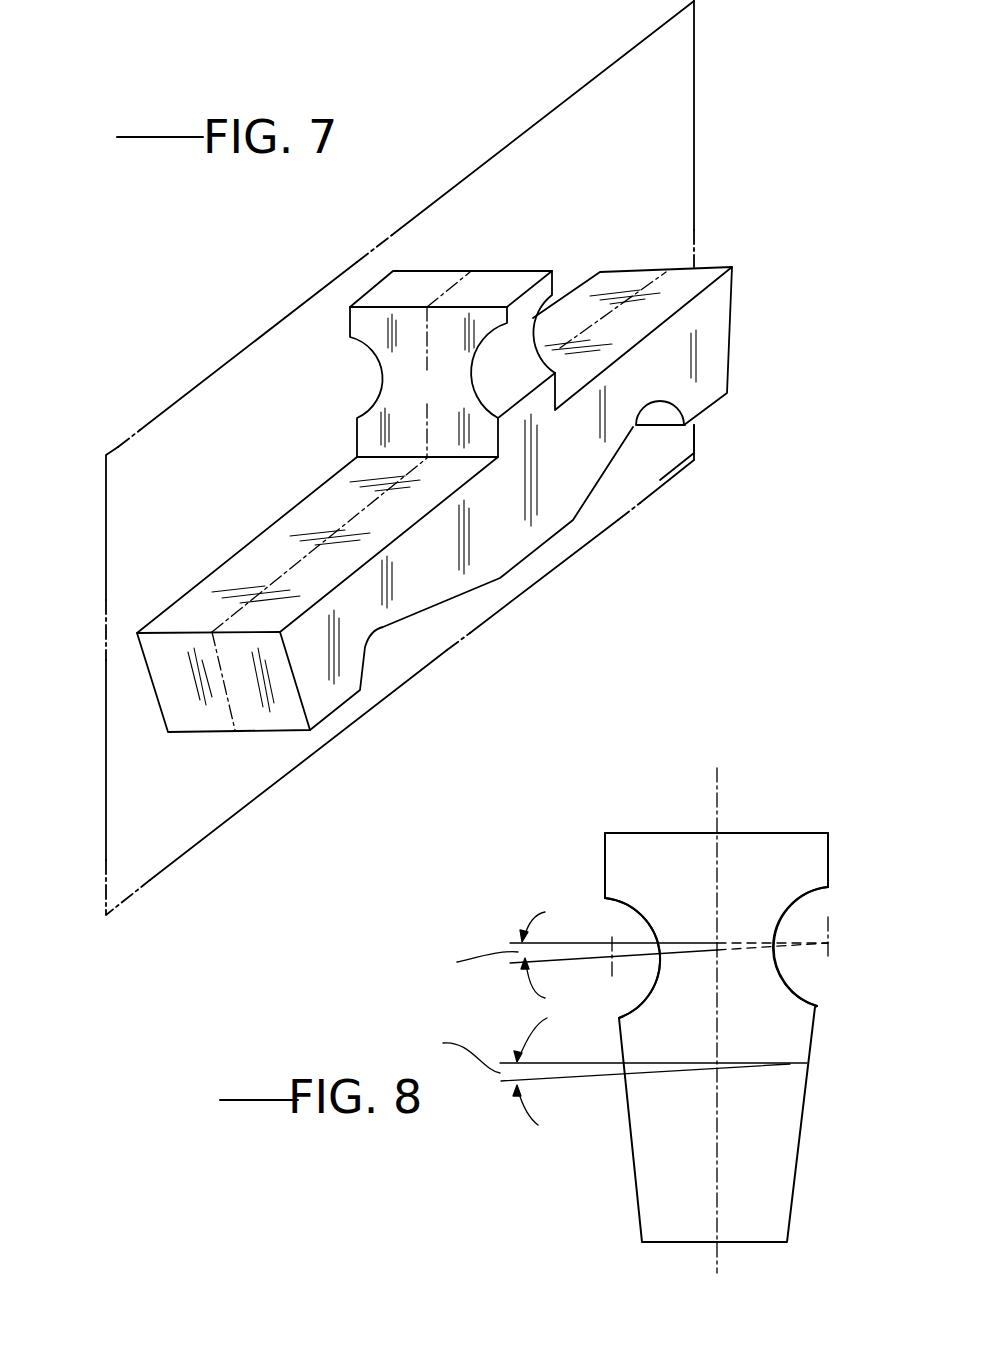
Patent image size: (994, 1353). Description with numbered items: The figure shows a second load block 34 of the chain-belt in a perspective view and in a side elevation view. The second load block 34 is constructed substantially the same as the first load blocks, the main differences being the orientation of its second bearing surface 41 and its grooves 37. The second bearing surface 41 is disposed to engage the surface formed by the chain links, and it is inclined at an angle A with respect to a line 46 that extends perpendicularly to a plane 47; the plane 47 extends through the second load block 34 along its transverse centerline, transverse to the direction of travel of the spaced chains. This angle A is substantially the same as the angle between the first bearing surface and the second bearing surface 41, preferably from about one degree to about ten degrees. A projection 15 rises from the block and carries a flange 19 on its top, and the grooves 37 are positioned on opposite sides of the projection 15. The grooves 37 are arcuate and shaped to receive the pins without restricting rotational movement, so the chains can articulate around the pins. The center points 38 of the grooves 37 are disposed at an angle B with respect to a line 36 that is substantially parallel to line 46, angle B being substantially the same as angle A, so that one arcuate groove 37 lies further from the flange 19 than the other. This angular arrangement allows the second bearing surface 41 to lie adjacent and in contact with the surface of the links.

In FIG. 7, the projection 15 is at (446, 404).
In FIG. 8, the projection 15 is at (761, 897).
In FIG. 7, the flange 19 is at (428, 283).
In FIG. 8, the flange 19 is at (658, 833).
In FIG. 7, the second load block 34 is at (152, 562).
In FIG. 8, the angle B between center line and horizontal 36 is at (522, 943).
In FIG. 8, the groove 37 is at (636, 913).
In FIG. 8, the center point 38 is at (614, 956).
In FIG. 7, the second bearing surface 41 is at (667, 298).
In FIG. 8, the line 46 is at (512, 1061).
In FIG. 7, the plane 47 is at (697, 163).
In FIG. 8, the plane 47 is at (722, 800).